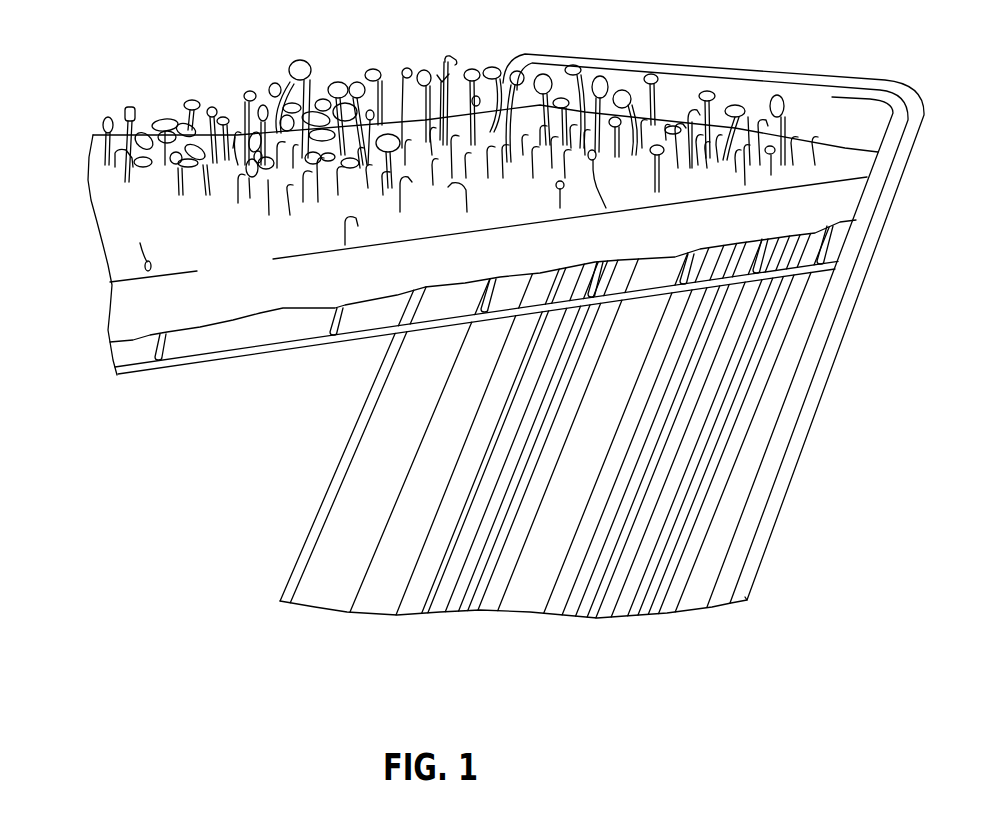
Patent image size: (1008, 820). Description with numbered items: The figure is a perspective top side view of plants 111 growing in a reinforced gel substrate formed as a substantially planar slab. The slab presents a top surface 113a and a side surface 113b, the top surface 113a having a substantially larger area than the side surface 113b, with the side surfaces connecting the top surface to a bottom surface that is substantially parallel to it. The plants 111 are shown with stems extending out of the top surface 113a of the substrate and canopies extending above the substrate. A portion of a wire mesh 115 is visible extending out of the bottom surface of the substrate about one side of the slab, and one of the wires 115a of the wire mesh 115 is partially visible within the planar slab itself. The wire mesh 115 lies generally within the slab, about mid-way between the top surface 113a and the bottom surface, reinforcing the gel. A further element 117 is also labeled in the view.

The plants 111 is at (243, 45).
The top surface 113a is at (137, 207).
The side surface 113b is at (265, 288).
The wire mesh 115 is at (228, 362).
The wire 115a is at (142, 270).
The grooved drainage plate 117 is at (523, 587).